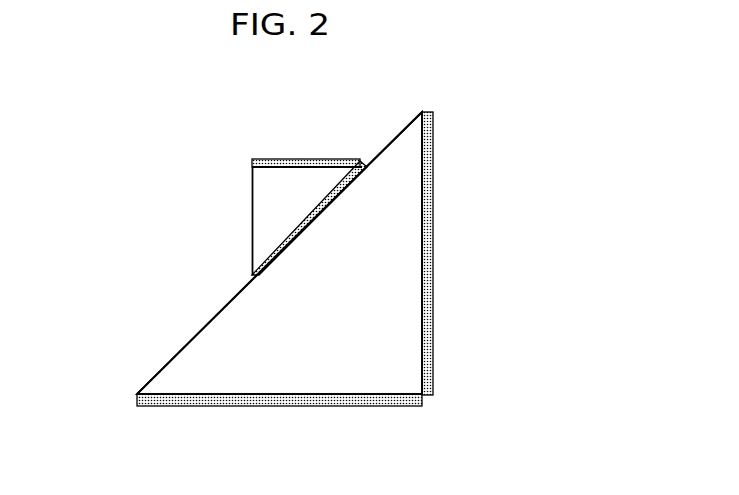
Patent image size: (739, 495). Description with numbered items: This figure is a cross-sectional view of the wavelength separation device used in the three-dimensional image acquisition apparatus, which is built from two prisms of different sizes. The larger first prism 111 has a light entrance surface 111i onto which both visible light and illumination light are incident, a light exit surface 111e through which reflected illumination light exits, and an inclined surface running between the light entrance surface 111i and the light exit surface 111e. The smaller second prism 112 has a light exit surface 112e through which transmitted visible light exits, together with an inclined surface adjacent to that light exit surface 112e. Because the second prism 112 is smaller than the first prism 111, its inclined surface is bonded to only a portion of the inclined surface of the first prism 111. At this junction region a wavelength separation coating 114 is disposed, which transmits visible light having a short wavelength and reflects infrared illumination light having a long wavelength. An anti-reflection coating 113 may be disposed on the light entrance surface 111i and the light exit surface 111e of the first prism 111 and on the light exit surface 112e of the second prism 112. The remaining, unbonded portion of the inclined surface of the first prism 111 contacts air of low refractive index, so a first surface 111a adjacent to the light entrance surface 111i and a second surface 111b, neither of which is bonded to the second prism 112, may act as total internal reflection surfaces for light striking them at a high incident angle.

The first prism 111 is at (405, 288).
The first surface 111a is at (185, 345).
The second surface 111b is at (390, 140).
The light exit surface 111e is at (421, 221).
The light entrance surface 111i is at (347, 378).
The second prism 112 is at (252, 215).
The light exit surface 112e is at (254, 171).
The anti-reflection coating 113 is at (433, 177).
The wavelength separation coating 114 is at (251, 277).